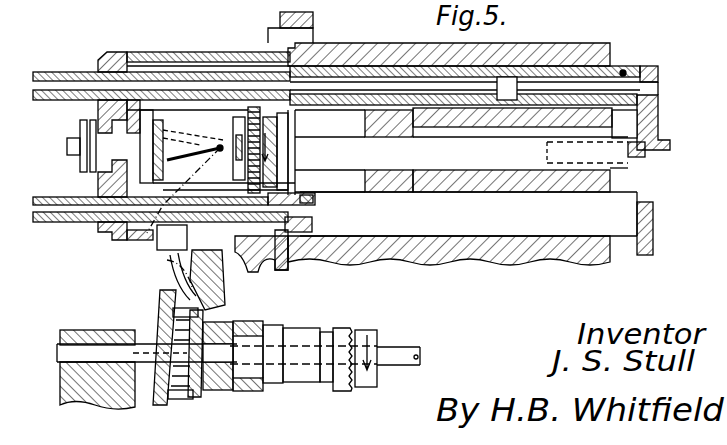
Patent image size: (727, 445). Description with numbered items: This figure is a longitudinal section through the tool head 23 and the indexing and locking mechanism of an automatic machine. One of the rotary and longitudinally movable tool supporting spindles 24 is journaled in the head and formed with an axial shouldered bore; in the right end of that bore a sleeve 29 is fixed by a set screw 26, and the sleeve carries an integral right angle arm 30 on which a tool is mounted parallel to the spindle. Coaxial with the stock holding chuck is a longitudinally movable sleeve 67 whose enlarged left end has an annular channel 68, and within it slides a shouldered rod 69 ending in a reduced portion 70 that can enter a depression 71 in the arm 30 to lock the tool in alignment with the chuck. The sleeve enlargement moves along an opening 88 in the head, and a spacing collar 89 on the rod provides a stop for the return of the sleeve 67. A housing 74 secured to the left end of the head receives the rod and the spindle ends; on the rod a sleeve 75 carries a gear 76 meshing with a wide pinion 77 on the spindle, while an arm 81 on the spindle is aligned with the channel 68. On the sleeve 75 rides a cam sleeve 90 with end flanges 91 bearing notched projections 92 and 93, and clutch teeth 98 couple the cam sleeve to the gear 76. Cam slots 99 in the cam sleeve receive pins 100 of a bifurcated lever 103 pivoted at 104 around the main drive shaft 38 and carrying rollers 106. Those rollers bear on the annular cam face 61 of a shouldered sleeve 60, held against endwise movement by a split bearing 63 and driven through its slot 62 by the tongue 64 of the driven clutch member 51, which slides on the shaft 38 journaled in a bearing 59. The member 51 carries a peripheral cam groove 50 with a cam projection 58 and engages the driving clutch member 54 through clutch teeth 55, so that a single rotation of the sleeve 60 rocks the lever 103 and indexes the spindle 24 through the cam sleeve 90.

The tool head 23 is at (523, 48).
The tool supporting spindle 24 is at (47, 72).
The set screw 26 is at (623, 70).
The sleeve 29 is at (648, 72).
The right angle arm 30 is at (648, 127).
The main drive shaft 38 is at (401, 365).
The cam groove 50 is at (348, 387).
The driven clutch member 51 is at (342, 328).
The driving clutch member 54 is at (380, 343).
The clutch teeth 55 is at (370, 333).
The cam projection 58 is at (325, 383).
The bearing 59 is at (73, 330).
The shouldered sleeve 60 is at (215, 312).
The annular cam face 61 is at (178, 403).
The slot 62 is at (287, 350).
The bearing 63 is at (257, 392).
The tongue 64 is at (274, 350).
The longitudinally movable sleeve 67 is at (462, 170).
The annular channel 68 is at (300, 190).
The shouldered shaft or rod 69 is at (597, 172).
The reduced portion 70 is at (650, 172).
The depression 71 is at (660, 155).
The housing 74 is at (190, 54).
The sleeve 75 is at (83, 147).
The gear 76 is at (255, 100).
The pinion 77 is at (220, 117).
The arm 81 is at (320, 66).
The opening 88 is at (353, 127).
The spacing collar 89 is at (292, 206).
The cam sleeve 90 is at (167, 123).
The flange 91 is at (140, 120).
The notched projection 92 is at (207, 110).
The notched projection 93 is at (177, 141).
The clutch teeth 98 is at (278, 148).
The cam slot 99 is at (103, 185).
The pin 100 is at (167, 230).
The bifurcated lever 103 is at (168, 304).
The pivot 104 is at (147, 353).
The roller 106 is at (173, 312).